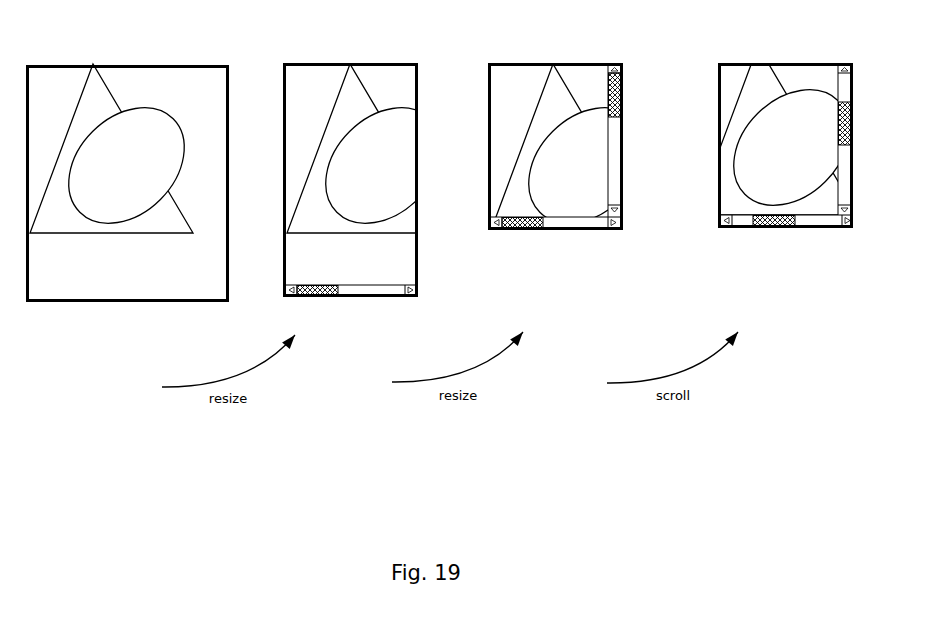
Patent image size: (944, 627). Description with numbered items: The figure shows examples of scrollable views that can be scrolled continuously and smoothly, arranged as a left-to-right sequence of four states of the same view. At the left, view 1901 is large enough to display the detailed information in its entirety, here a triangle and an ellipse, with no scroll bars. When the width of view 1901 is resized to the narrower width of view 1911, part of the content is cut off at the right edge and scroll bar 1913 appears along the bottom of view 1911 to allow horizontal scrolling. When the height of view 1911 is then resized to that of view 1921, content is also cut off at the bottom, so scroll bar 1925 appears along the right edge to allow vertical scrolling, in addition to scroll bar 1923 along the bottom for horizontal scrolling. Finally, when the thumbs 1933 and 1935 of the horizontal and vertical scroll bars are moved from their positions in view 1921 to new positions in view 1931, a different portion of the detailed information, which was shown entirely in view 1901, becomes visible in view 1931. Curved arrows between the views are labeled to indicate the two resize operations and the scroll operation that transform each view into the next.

The view 1901 is at (202, 64).
The view 1911 is at (375, 184).
The scroll bar 1913 is at (375, 289).
The view 1921 is at (582, 149).
The scroll bar 1923 is at (580, 221).
The scroll bar 1925 is at (614, 153).
The view 1931 is at (800, 149).
The thumb 1933 is at (775, 228).
The thumb 1935 is at (852, 122).